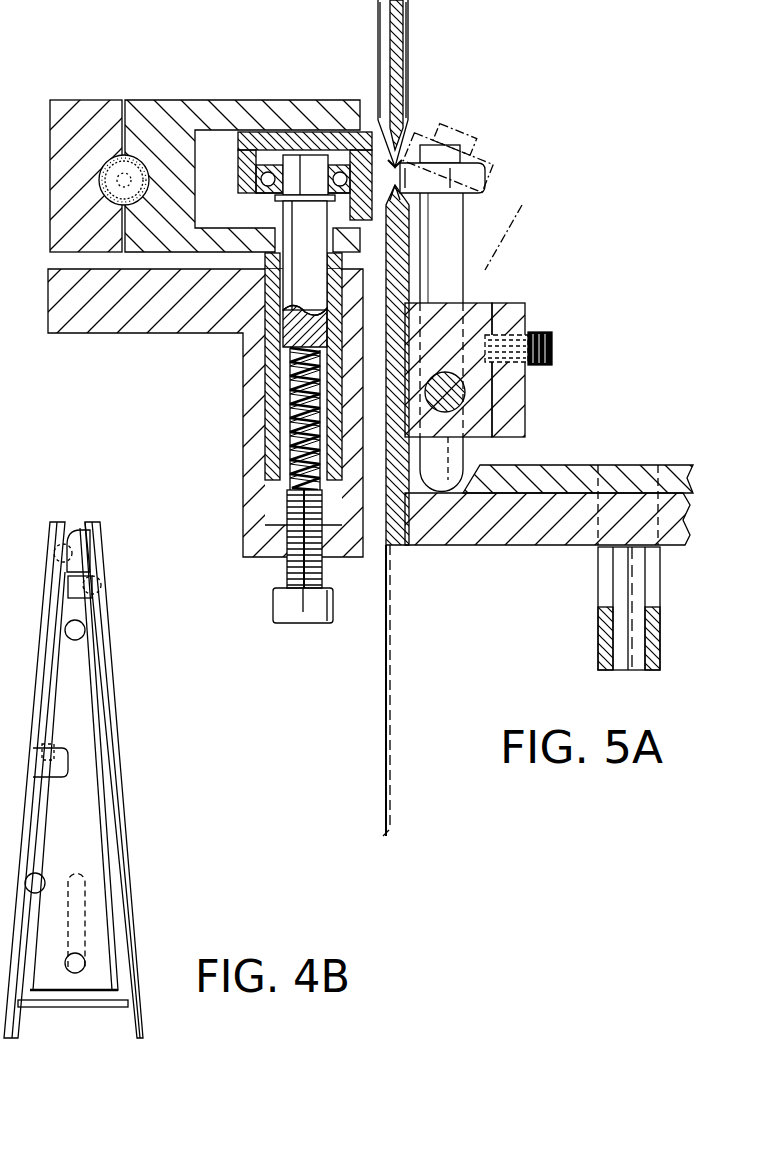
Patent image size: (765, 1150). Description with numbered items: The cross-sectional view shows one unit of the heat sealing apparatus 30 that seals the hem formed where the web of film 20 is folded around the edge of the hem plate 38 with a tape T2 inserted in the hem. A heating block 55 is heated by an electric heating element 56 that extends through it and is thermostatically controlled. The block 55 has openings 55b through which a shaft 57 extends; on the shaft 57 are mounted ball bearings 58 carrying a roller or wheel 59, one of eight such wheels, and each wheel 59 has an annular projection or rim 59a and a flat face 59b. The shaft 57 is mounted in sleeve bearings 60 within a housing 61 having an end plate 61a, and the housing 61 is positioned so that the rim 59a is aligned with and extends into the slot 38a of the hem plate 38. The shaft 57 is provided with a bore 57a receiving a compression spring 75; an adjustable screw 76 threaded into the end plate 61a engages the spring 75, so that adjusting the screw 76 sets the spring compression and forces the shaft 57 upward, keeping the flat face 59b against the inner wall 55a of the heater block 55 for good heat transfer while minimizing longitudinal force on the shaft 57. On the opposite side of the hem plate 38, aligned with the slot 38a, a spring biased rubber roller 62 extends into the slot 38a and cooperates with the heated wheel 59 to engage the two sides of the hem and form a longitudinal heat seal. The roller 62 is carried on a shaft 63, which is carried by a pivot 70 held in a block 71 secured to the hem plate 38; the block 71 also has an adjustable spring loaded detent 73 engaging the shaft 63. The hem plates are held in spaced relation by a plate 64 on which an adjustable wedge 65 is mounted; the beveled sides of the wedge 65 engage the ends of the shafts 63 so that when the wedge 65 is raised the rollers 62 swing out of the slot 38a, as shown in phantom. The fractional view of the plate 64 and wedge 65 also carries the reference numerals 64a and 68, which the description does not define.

In FIG. 5A, the web of film 20 is at (390, 652).
In FIG. 5A, the heat sealing apparatus 30 is at (294, 39).
In FIG. 5A, the hem plate 38 is at (380, 40).
In FIG. 5A, the slot 38a is at (397, 158).
In FIG. 5A, the tape T2 is at (408, 33).
In FIG. 5A, the heating block 55 is at (155, 110).
In FIG. 5A, the inner wall 55a is at (230, 128).
In FIG. 5A, the openings 55b is at (280, 240).
In FIG. 5A, the electric heating element 56 is at (99, 178).
In FIG. 5A, the shaft 57 is at (275, 285).
In FIG. 5A, the bore 57a is at (290, 490).
In FIG. 5A, the ball bearings 58 is at (272, 168).
In FIG. 5A, the rollers or wheels 59 is at (328, 130).
In FIG. 5A, the annular projection or rim 59a is at (224, 178).
In FIG. 5A, the flat face 59b is at (293, 130).
In FIG. 5A, the sleeve bearings 60 is at (272, 390).
In FIG. 5A, the housing 61 is at (252, 430).
In FIG. 5A, the end plate 61a is at (268, 557).
In FIG. 5A, the rubber rollers 62 is at (470, 172).
In FIG. 5A, the shafts 63 is at (448, 270).
In FIG. 5A, the plate 64 is at (471, 549).
In FIG. 4B, the plate 64 is at (112, 798).
In FIG. 4B, the slot in base frame 64a is at (103, 575).
In FIG. 5A, the adjustable wedge 65 is at (598, 485).
In FIG. 4B, the adjustable wedge 65 is at (83, 842).
In FIG. 5A, the bushing 68 is at (610, 578).
In FIG. 4B, the bushing 68 is at (84, 632).
In FIG. 5A, the pivots 70 is at (450, 395).
In FIG. 5A, the blocks 71 is at (485, 414).
In FIG. 5A, the spring loaded detents 73 is at (533, 333).
In FIG. 5A, the compression spring 75 is at (290, 412).
In FIG. 5A, the adjustable screw 76 is at (291, 610).